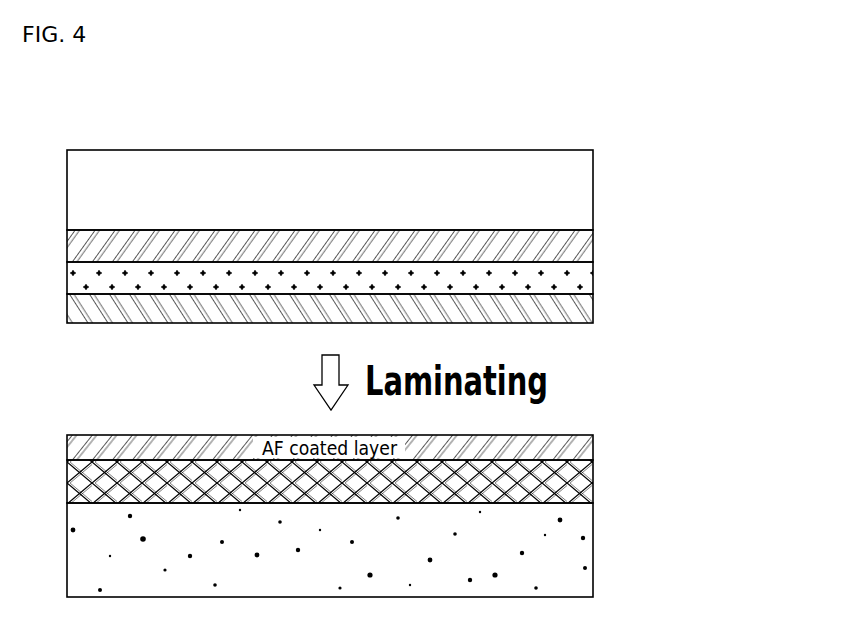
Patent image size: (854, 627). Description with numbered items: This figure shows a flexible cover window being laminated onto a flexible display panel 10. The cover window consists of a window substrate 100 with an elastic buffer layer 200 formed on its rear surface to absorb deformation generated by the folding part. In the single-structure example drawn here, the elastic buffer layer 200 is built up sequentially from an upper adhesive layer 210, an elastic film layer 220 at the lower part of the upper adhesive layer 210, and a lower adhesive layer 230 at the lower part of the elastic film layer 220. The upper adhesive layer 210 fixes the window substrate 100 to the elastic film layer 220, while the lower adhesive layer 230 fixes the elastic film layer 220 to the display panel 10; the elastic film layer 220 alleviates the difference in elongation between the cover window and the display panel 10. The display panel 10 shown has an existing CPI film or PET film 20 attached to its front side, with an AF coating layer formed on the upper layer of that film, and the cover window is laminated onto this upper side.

The window substrate 100 is at (578, 189).
The elastic buffer layer 200 is at (419, 276).
The upper adhesive layer 210 is at (585, 243).
The elastic film layer 220 is at (580, 279).
The lower adhesive layer 230 is at (578, 313).
The CPI film or PET film 20 is at (577, 480).
The flexible display panel 10 is at (577, 558).